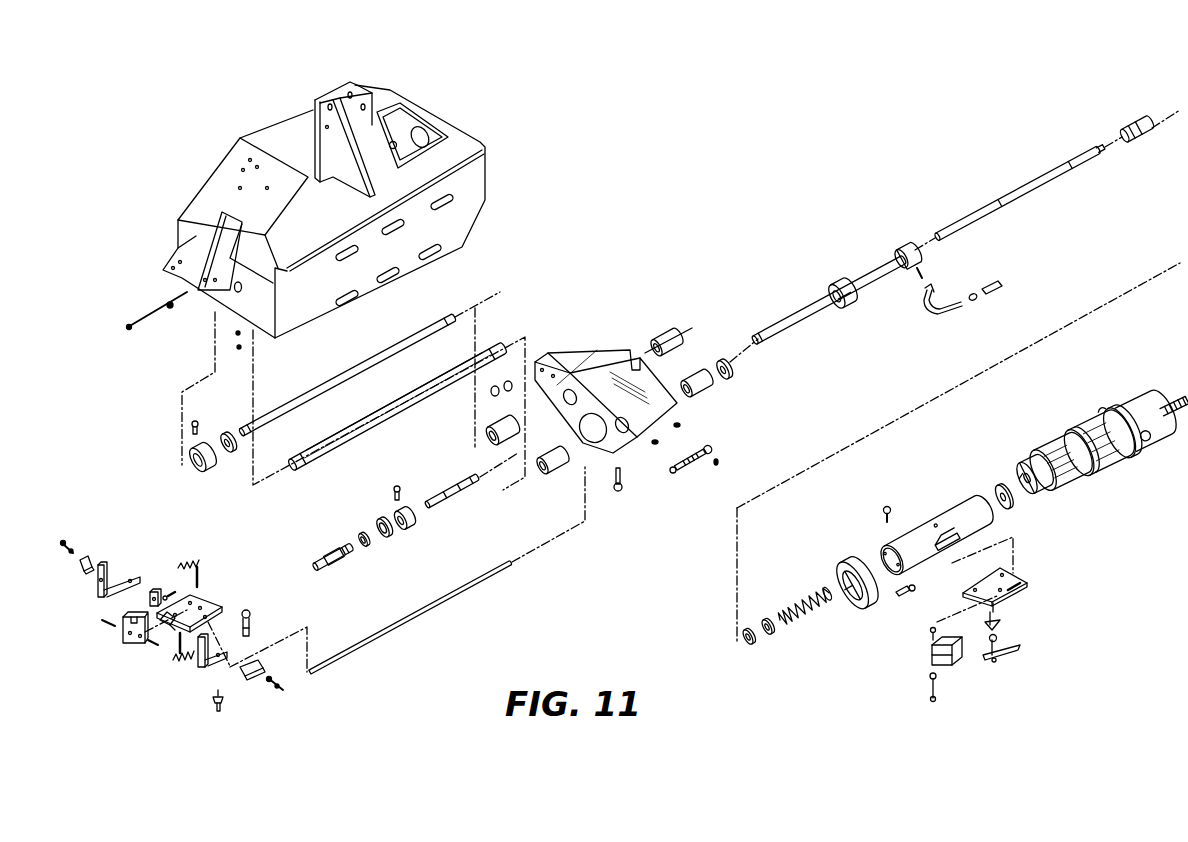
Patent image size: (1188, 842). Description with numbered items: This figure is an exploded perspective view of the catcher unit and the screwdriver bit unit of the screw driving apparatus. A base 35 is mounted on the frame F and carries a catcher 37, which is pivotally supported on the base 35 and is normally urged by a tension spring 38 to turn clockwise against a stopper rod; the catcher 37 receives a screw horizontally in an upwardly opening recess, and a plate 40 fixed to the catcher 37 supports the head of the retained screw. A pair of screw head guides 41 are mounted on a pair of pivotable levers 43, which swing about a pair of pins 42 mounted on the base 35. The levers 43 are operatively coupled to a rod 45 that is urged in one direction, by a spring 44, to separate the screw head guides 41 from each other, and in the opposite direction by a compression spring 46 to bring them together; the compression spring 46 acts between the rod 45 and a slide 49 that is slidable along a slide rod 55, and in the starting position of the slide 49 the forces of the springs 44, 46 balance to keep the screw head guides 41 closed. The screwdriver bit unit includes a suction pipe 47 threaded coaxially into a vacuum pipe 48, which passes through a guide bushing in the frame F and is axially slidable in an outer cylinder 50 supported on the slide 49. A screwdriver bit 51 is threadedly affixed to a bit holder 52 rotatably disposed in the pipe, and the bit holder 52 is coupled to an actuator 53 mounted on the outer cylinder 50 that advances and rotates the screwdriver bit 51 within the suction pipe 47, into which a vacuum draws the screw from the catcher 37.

The frame F is at (306, 302).
The base 35 is at (203, 593).
The catcher 37 is at (130, 647).
The tension spring 38 is at (190, 558).
The plate 40 is at (155, 588).
The screw head guides 41 is at (80, 568).
The pins 42 is at (223, 705).
The pivotable levers 43 is at (102, 592).
The spring 44 is at (175, 660).
The rod 45 is at (377, 640).
The compression spring 46 is at (690, 462).
The suction pipe 47 is at (325, 570).
The vacuum pipe 48 is at (803, 320).
The slide 49 is at (634, 442).
The outer cylinder 50 is at (935, 517).
The screwdriver bit 51 is at (458, 492).
The bit holder 52 is at (1042, 183).
The actuator 53 is at (1097, 457).
The slide rod 55 is at (390, 352).